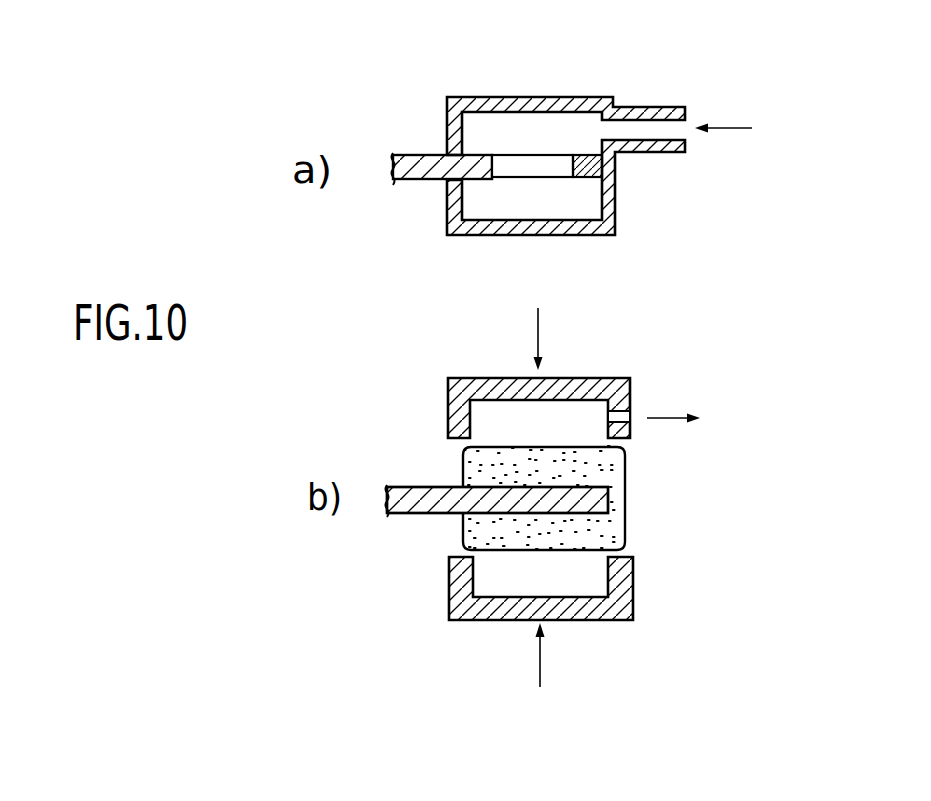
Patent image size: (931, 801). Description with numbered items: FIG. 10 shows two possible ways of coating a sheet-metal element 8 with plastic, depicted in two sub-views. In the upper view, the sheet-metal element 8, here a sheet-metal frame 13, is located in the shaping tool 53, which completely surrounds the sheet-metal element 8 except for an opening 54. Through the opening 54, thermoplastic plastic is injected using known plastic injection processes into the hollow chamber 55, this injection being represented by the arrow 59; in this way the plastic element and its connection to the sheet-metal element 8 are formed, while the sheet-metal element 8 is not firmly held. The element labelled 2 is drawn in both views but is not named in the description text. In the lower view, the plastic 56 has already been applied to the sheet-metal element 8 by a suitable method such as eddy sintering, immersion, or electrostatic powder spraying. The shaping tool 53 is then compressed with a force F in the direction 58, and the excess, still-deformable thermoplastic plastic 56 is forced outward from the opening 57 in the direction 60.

The tube 2 is at (414, 153).
The shaping tool 53 is at (508, 100).
The hollow chamber 55 is at (570, 125).
The opening 54 is at (665, 125).
The arrow 59 is at (752, 128).
The sheet-metal frame 13 is at (592, 168).
The sheet-metal element 8 is at (432, 507).
The opening 57 is at (622, 405).
The direction 58 is at (538, 320).
The direction 60 is at (663, 418).
The plastic 56 is at (622, 530).